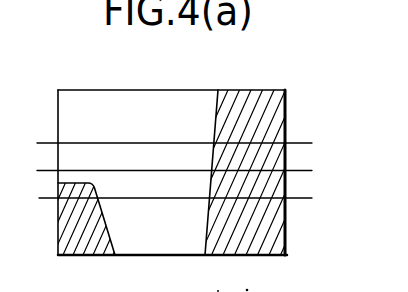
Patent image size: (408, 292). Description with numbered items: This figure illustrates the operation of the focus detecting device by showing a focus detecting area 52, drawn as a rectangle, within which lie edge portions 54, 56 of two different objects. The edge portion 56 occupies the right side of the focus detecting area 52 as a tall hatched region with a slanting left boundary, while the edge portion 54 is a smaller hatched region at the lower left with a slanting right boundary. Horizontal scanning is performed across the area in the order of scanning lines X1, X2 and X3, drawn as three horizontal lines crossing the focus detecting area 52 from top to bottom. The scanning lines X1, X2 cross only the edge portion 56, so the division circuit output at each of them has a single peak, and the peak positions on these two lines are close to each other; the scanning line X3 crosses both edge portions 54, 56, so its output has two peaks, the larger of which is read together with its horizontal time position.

The focus detecting area 52 is at (182, 90).
The edge portion 54 is at (147, 228).
The edge portion 56 is at (216, 116).
The scanning line X1 is at (179, 135).
The scanning line X2 is at (179, 162).
The scanning line X3 is at (180, 190).